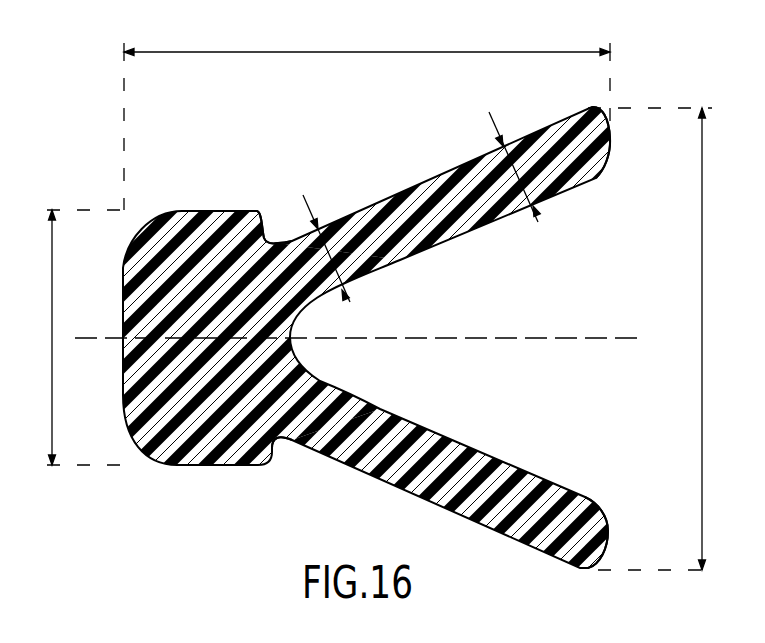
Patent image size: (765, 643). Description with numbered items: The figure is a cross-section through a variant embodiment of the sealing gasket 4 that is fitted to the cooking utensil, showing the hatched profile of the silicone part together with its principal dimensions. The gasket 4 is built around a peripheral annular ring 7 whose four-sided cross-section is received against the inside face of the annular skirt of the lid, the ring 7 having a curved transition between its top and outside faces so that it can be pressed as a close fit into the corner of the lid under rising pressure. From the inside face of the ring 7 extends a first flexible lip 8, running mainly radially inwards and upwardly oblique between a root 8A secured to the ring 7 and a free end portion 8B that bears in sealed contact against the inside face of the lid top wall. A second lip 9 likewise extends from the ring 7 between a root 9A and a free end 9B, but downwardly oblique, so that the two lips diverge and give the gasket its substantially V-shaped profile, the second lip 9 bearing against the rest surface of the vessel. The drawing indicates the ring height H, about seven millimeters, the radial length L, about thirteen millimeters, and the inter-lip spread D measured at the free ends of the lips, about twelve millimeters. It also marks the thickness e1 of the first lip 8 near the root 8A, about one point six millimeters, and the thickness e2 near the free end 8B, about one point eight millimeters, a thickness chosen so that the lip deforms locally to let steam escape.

The sealing gasket 4 is at (90, 188).
The peripheral annular ring 7 is at (185, 363).
The first flexible lip 8 is at (390, 206).
The root 8A is at (277, 241).
The free end portion 8B is at (573, 158).
The second lip 9 is at (452, 476).
The root 9A is at (277, 413).
The free end 9B is at (571, 525).
The thickness e1 is at (326, 243).
The thickness e2 is at (514, 158).
The length L is at (367, 119).
The ring height H is at (78, 337).
The inter-lip spread D is at (655, 339).